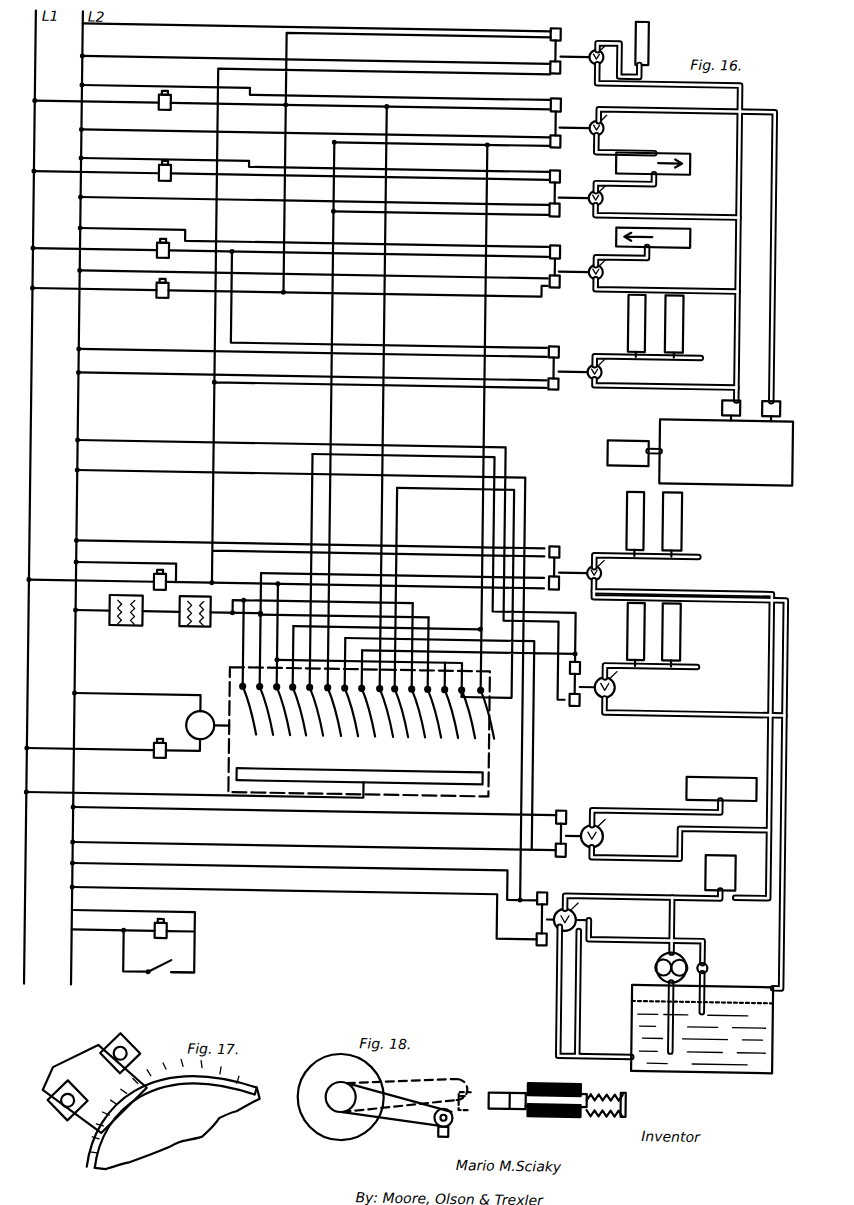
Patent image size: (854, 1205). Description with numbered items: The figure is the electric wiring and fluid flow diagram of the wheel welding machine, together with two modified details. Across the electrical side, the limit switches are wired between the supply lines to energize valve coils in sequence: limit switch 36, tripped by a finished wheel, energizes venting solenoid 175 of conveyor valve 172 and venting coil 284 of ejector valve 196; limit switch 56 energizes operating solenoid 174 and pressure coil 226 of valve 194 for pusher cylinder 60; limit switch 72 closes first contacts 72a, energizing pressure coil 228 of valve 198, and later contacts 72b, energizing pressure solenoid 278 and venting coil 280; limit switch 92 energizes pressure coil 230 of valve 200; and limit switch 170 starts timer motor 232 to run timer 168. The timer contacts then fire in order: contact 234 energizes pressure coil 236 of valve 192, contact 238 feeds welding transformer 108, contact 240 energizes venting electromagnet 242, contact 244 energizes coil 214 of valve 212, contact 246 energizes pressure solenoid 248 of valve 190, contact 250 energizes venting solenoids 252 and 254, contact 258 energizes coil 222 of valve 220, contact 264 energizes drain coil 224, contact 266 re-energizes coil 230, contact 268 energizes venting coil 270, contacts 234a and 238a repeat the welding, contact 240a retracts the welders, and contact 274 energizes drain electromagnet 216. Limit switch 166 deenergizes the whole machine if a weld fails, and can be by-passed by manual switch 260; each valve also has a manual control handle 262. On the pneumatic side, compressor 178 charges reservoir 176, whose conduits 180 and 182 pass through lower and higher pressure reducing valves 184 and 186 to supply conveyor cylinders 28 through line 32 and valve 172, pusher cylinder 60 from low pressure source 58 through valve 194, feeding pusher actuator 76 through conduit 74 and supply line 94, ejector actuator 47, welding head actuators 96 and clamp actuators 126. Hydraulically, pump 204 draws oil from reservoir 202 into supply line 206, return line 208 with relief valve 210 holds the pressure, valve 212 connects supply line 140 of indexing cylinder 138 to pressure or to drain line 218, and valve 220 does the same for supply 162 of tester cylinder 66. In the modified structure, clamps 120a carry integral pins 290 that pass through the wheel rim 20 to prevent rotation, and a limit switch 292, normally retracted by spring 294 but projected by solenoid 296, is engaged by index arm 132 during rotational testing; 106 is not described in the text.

In FIG. 16, the limit switch 92 is at (173, 98).
In FIG. 16, the limit switch 72 is at (170, 160).
In FIG. 16, the first set of contacts 72a is at (164, 160).
In FIG. 16, the contacts 72b is at (160, 296).
In FIG. 16, the limit switch 56 is at (158, 250).
In FIG. 16, the limit switch 36 is at (160, 578).
In FIG. 16, the limit switch 170 is at (162, 747).
In FIG. 16, the limit switch 166 is at (180, 934).
In FIG. 16, the manually actuated control switch 260 is at (162, 972).
In FIG. 16, the welding transformer 108 is at (195, 624).
In FIG. 16, the timer motor 232 is at (196, 716).
In FIG. 16, the timer 168 is at (405, 790).
In FIG. 16, the timer contact 274 is at (360, 773).
In FIG. 16, the first timer contact 234 is at (245, 667).
In FIG. 16, the second timer contact 238 is at (253, 658).
In FIG. 16, the timer contact 240 is at (261, 672).
In FIG. 16, the timer contact 244 is at (291, 681).
In FIG. 16, the timer contact 246 is at (301, 598).
In FIG. 16, the timer contact 250 is at (311, 451).
In FIG. 16, the timer contact 258 is at (340, 687).
In FIG. 16, the timer contact 264 is at (348, 697).
In FIG. 16, the timer contact 266 is at (361, 434).
In FIG. 16, the timer contact 268 is at (387, 612).
In FIG. 16, the timer contact 234a is at (391, 675).
In FIG. 16, the timer contact 238a is at (420, 677).
In FIG. 16, the timer contact 240a is at (449, 453).
In FIG. 16, the pressure solenoid 278 is at (553, 19).
In FIG. 16, the venting coil 284 is at (553, 52).
In FIG. 16, the pressure coil 230 is at (553, 89).
In FIG. 16, the venting solenoid 254 is at (553, 126).
In FIG. 16, the pressure coil 228 is at (553, 161).
In FIG. 16, the venting solenoid 252 is at (553, 194).
In FIG. 16, the pressure coil 226 is at (554, 236).
In FIG. 16, the venting coil 280 is at (554, 266).
In FIG. 16, the operating solenoid 174 is at (555, 336).
In FIG. 16, the solenoid 175 is at (556, 381).
In FIG. 16, the pressure coil 236 is at (558, 537).
In FIG. 16, the venting electromagnet 242 is at (559, 581).
In FIG. 16, the pressure solenoid 248 is at (582, 651).
In FIG. 16, the venting coil 270 is at (583, 697).
In FIG. 16, the pressure introducing coil 222 is at (572, 800).
In FIG. 16, the restoring or drain coil 224 is at (571, 848).
In FIG. 16, the pressure introducing coil 214 is at (545, 886).
In FIG. 16, the restoring or drain electromagnet 216 is at (546, 932).
In FIG. 16, the control valve 196 is at (594, 60).
In FIG. 16, the control valve 200 is at (594, 126).
In FIG. 16, the control valve 198 is at (606, 189).
In FIG. 16, the control valve 194 is at (595, 272).
In FIG. 16, the air pressure supply line 32 is at (606, 366).
In FIG. 16, the valve 172 is at (594, 370).
In FIG. 16, the three-way valve 192 is at (596, 557).
In FIG. 16, the three-way valve 190 is at (602, 690).
In FIG. 16, the manual control handle 262 is at (625, 672).
In FIG. 16, the three-way valve 220 is at (600, 840).
In FIG. 16, the ejector actuator 47 is at (649, 30).
In FIG. 16, the supply line 94 is at (640, 142).
In FIG. 16, the feeding pusher actuator 76 is at (678, 150).
In FIG. 18, the feeding pusher actuator 76 is at (340, 1055).
In FIG. 16, the conduit 74 is at (660, 170).
In FIG. 16, the pusher cylinder 60 is at (670, 240).
In FIG. 16, the low pressure source of supply 58 is at (615, 248).
In FIG. 16, the air cylinder 28 is at (632, 332).
In FIG. 16, the outlet conduit 180 is at (740, 365).
In FIG. 16, the outlet conduit 182 is at (775, 343).
In FIG. 16, the lower pressure reducing valve 184 is at (726, 394).
In FIG. 16, the higher pressure reducing valve 186 is at (770, 387).
In FIG. 16, the supply reservoir 176 is at (792, 472).
In FIG. 16, the compressor 178 is at (635, 430).
In FIG. 16, the welding head actuators 96 is at (633, 530).
In FIG. 16, the pipe 106 is at (620, 556).
In FIG. 16, the clamp actuators 126 is at (635, 626).
In FIG. 16, the cylinder and piston structure 66 is at (696, 775).
In FIG. 16, the supply source 162 is at (640, 800).
In FIG. 16, the hydraulic actuator 138 is at (728, 850).
In FIG. 16, the supply line 140 is at (628, 886).
In FIG. 16, the three-way valve 212 is at (600, 910).
In FIG. 16, the supply line 206 is at (686, 926).
In FIG. 16, the return line 208 is at (716, 940).
In FIG. 16, the pump 204 is at (668, 958).
In FIG. 16, the relief valve 210 is at (720, 957).
In FIG. 16, the oil reservoir 202 is at (644, 1010).
In FIG. 16, the drain line 218 is at (644, 1040).
In FIG. 17, the clamps 120a is at (95, 1060).
In FIG. 17, the integral pins 290 is at (150, 1122).
In FIG. 17, the wheel rim 20 is at (104, 1160).
In FIG. 18, the arm 132 is at (458, 1064).
In FIG. 18, the limit switch 292 is at (540, 1082).
In FIG. 18, the solenoid 296 is at (606, 1073).
In FIG. 18, the spring 294 is at (603, 1082).